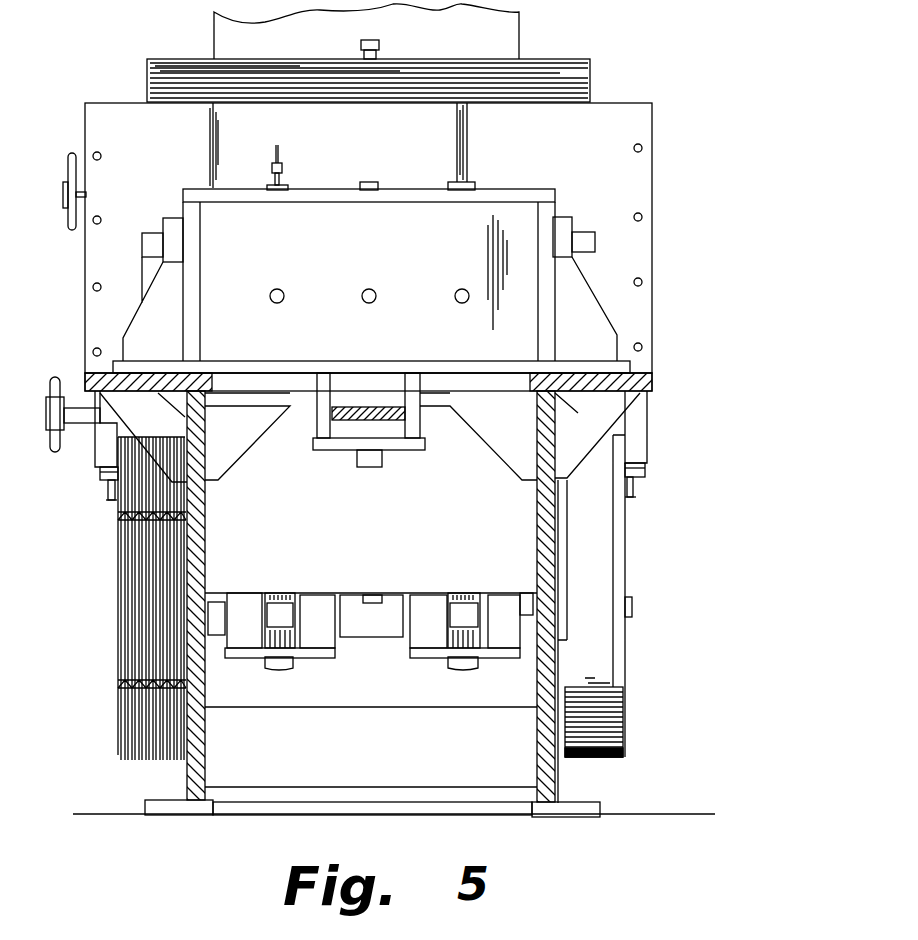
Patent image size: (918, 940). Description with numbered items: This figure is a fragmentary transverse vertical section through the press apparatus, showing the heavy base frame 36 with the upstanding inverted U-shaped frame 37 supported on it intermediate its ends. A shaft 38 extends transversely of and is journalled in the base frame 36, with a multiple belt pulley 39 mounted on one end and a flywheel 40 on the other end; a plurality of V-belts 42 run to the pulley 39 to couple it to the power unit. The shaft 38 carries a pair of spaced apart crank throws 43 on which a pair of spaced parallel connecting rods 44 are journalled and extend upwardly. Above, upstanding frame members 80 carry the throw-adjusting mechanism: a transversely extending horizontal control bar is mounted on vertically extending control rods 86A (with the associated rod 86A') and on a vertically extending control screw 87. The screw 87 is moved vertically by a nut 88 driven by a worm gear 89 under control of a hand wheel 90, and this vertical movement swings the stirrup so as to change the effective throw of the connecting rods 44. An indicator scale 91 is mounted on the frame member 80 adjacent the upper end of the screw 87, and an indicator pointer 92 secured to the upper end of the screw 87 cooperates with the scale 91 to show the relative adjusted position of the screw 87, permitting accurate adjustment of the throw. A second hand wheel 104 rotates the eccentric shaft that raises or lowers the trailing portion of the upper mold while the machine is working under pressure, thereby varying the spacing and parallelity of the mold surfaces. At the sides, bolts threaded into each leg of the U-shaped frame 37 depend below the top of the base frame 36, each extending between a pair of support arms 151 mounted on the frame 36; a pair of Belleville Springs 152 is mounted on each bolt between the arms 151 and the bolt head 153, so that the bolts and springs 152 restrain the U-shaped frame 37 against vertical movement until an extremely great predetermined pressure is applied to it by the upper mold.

The base frame 36 is at (594, 773).
The U-shaped frame 37 is at (580, 78).
The shaft 38 is at (632, 600).
The multiple belt pulley 39 is at (118, 628).
The flywheel 40 is at (620, 683).
The V-belts 42 is at (122, 687).
The crank throws 43 is at (252, 640).
The connecting rods 44 is at (286, 660).
The upstanding frame members 80 is at (545, 210).
The control rods 86A is at (476, 146).
The rod 86A' is at (391, 171).
The control screw 87 is at (287, 186).
The nut 88 is at (332, 413).
The worm gear 89 is at (287, 410).
The hand wheel 90 is at (53, 377).
The indicator scale 91 is at (279, 160).
The indicator pointer 92 is at (270, 168).
The hand wheel 104 is at (70, 232).
The support arms 151 is at (102, 440).
The Belleville Springs 152 is at (100, 486).
The head 153 is at (110, 503).